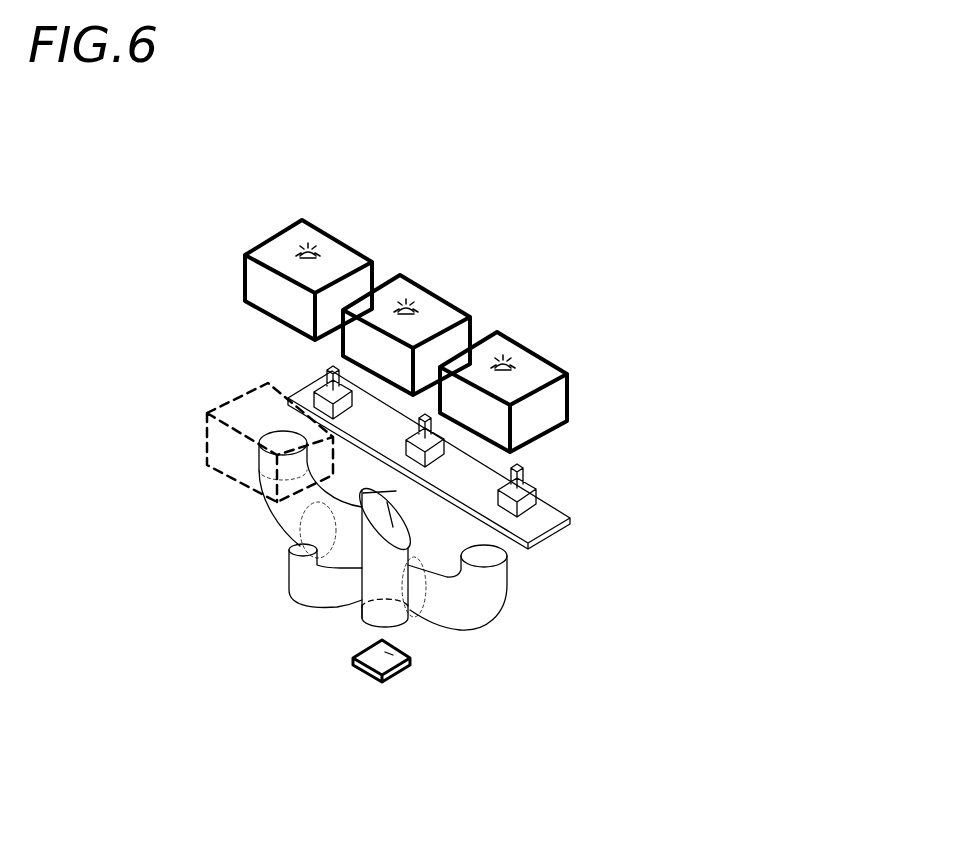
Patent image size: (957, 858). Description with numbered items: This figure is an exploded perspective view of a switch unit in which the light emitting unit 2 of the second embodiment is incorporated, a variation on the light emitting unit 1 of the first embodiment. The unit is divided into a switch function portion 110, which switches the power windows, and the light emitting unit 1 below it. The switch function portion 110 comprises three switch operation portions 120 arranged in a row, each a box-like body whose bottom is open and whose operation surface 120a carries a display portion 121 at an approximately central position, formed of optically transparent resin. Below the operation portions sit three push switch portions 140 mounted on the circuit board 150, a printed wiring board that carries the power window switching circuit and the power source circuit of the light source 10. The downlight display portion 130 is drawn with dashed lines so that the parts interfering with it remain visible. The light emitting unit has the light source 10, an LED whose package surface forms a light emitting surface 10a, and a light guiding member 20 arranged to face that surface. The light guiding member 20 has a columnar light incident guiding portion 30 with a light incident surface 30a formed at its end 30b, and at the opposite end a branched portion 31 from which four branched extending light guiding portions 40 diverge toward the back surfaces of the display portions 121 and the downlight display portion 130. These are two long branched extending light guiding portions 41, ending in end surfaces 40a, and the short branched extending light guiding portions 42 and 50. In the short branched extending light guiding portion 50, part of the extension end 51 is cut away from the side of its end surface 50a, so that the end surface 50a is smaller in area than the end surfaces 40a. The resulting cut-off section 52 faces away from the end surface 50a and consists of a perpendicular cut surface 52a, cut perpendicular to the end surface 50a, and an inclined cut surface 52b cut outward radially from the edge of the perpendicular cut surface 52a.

The light emitting unit 1 is at (195, 797).
The light emitting unit 2 is at (409, 210).
The light source 10 is at (297, 668).
The light emitting surface 10a is at (405, 648).
The light guiding member 20 is at (254, 493).
The light incident guiding portion 30 is at (349, 617).
The light incident surface 30a is at (410, 620).
The end 30b is at (340, 669).
The branched portion 31 is at (487, 558).
The branched extending light guiding portions 40 is at (369, 468).
The end surfaces 40a is at (283, 432).
The long branched extending light guiding portions 41 is at (280, 468).
The short branched extending light guiding portion 42 is at (300, 576).
The short branched extending light guiding portion 50 is at (363, 530).
The end surface 50a is at (368, 522).
The extension end 51 is at (418, 508).
The cut-off section 52 is at (678, 352).
The perpendicular cut surface 52a is at (411, 540).
The inclined cut surface 52b is at (522, 475).
The switch function portion 110 is at (762, 153).
The switch operation portions 120 is at (547, 357).
The operation surface 120a is at (273, 262).
The display portion 121 is at (315, 248).
The downlight display portion 130 is at (207, 413).
The push switch portions 140 is at (570, 518).
The circuit board 150 is at (537, 498).